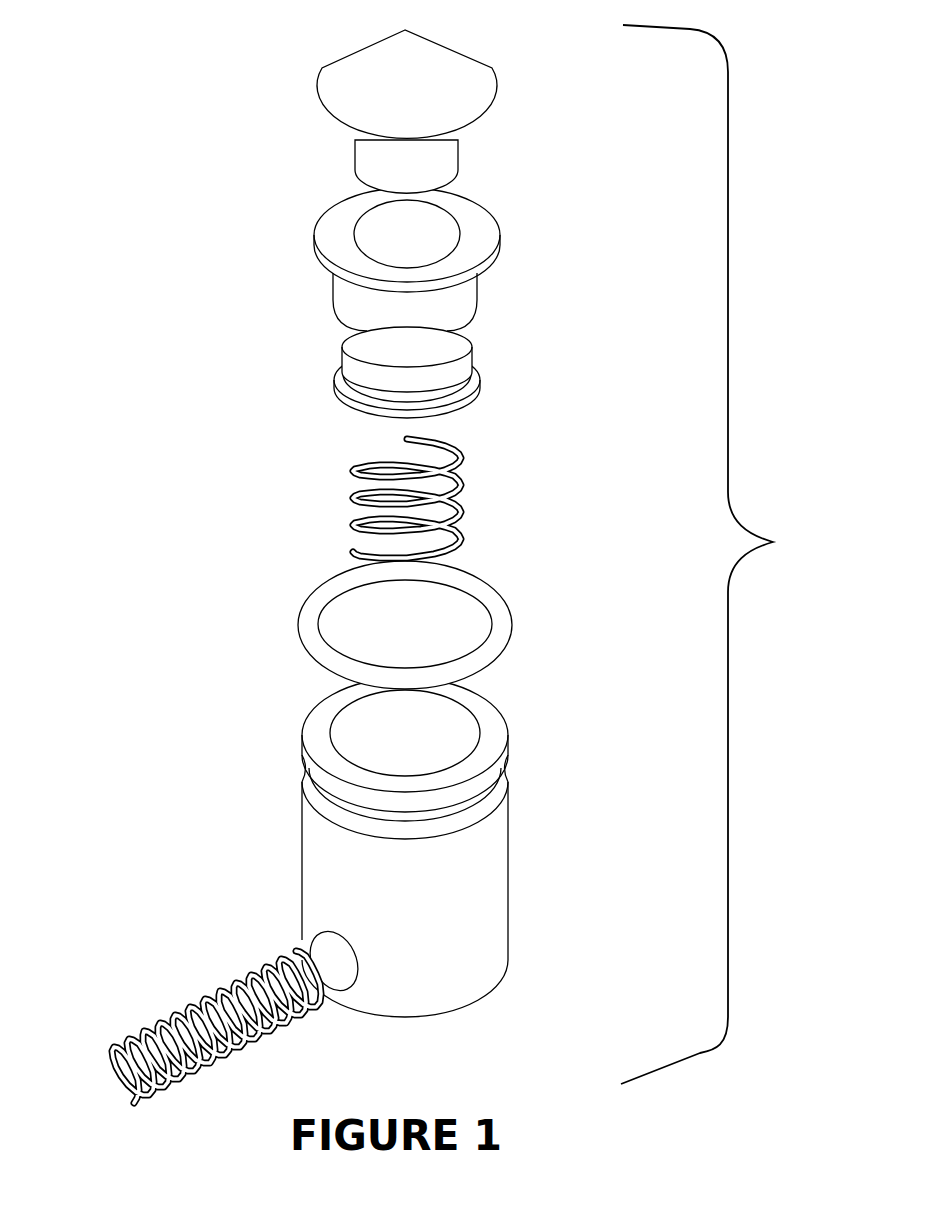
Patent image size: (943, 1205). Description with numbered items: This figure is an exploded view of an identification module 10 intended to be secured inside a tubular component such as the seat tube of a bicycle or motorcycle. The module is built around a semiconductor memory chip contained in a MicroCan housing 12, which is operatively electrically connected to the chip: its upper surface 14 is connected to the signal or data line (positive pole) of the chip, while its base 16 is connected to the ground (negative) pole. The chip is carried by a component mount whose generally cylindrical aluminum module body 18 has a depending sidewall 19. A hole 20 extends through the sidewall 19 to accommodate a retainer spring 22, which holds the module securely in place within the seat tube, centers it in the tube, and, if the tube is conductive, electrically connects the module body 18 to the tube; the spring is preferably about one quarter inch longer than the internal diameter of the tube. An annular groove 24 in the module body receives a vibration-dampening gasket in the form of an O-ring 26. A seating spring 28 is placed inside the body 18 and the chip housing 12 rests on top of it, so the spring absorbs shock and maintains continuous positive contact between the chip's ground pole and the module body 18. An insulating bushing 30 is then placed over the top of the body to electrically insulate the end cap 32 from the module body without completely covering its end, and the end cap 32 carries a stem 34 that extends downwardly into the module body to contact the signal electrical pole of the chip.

The identification module 10 is at (720, 554).
The housing 12 is at (501, 382).
The upper surface 14 is at (358, 345).
The base 16 is at (325, 394).
The module body 18 is at (385, 864).
The sidewall 19 is at (487, 883).
The hole 20 is at (343, 966).
The retainer spring 22 is at (162, 1020).
The annular groove 24 is at (291, 768).
The O-ring 26 is at (492, 600).
The seating spring 28 is at (453, 472).
The insulating bushing 30 is at (480, 217).
The end cap 32 is at (306, 68).
The stem 34 is at (372, 158).